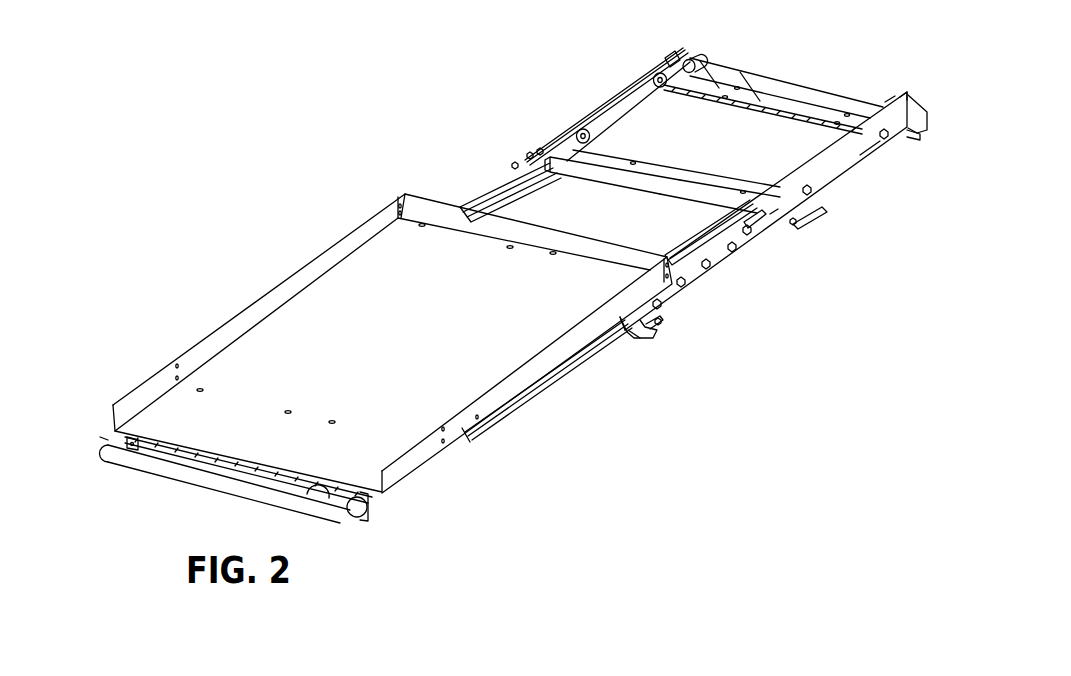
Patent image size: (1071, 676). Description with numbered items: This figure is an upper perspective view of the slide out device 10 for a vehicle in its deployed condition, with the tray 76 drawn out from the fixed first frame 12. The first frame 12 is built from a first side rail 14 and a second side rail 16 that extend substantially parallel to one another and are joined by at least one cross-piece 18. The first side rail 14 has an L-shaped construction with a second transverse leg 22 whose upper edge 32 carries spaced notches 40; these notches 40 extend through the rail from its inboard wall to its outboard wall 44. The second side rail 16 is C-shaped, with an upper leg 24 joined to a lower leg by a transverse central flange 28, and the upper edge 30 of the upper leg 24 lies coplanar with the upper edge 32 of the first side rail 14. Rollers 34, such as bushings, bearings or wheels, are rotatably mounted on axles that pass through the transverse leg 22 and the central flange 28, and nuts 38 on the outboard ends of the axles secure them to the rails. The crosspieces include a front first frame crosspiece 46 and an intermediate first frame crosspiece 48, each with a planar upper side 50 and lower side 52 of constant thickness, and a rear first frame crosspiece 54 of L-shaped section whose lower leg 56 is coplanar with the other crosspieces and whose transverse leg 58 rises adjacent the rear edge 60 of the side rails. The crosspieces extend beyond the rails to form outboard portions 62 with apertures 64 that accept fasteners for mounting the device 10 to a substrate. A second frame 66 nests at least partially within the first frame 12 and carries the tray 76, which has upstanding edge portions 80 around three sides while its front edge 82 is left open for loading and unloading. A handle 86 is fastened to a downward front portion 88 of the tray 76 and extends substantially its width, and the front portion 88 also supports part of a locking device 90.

The slide out device 10 is at (424, 176).
The first frame 12 is at (858, 166).
The first side rail 14 is at (860, 158).
The second side rail 16 is at (609, 95).
The cross-piece 18 is at (647, 170).
The second transverse leg 22 is at (907, 91).
The upper leg 24 is at (646, 68).
The transverse central flange 28 is at (673, 58).
The upper edge 30 is at (537, 150).
The upper edge 32 is at (891, 101).
The rollers 34 is at (580, 128).
The nuts 38 is at (920, 137).
The notches 40 is at (800, 170).
The outboard wall 44 is at (772, 216).
The front first frame crosspiece 46 is at (637, 325).
The intermediate first frame crosspiece 48 is at (720, 190).
The upper side 50 is at (687, 180).
The lower side 52 is at (810, 225).
The rear first frame crosspiece 54 is at (750, 96).
The lower leg 56 is at (719, 88).
The transverse leg 58 is at (783, 86).
The rear edge 60 is at (692, 58).
The outboard portions 62 is at (820, 212).
The apertures 64 is at (660, 318).
The second frame 66 is at (490, 192).
The tray 76 is at (267, 296).
The upstanding edge portions 80 is at (513, 387).
The front edge 82 is at (104, 438).
The handle 86 is at (157, 465).
The front portion 88 is at (201, 466).
The locking device 90 is at (317, 486).